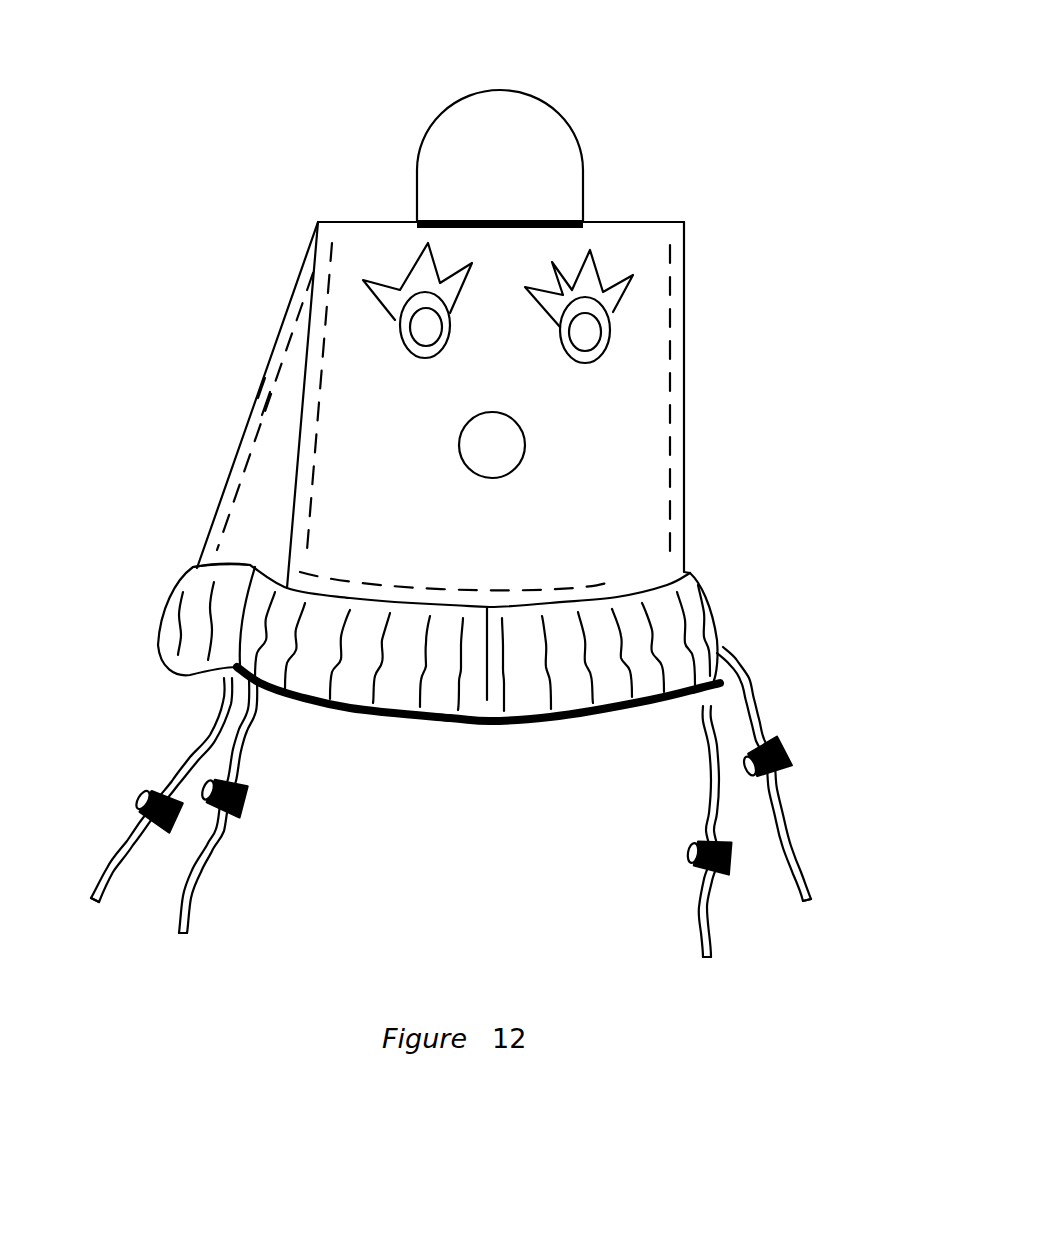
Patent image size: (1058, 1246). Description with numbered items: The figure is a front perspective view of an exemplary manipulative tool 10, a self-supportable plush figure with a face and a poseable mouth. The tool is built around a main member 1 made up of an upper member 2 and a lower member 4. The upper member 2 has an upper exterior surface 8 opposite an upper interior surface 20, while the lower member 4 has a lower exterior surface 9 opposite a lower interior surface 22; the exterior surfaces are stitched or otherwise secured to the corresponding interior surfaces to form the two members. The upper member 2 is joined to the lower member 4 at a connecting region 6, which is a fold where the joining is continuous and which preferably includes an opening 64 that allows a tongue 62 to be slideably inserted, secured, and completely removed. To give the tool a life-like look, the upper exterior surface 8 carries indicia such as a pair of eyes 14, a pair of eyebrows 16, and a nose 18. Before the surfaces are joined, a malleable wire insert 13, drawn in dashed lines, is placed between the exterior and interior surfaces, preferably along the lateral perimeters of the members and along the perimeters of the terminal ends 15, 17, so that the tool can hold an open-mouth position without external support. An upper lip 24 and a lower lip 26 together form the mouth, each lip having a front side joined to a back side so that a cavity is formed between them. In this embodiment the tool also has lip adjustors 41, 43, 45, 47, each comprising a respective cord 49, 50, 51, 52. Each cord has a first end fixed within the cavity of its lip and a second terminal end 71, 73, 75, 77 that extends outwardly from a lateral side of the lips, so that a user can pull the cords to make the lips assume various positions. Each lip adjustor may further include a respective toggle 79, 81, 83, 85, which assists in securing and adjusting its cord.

The manipulative tool 10 is at (670, 68).
The main member 1 is at (276, 172).
The upper member 2 is at (640, 453).
The lower member 4 is at (265, 452).
The connecting region 6 is at (617, 220).
The upper exterior surface 8 is at (673, 332).
The lower exterior surface 9 is at (263, 380).
The malleable wire insert 13 is at (672, 250).
The pair of eyes 14 is at (400, 343).
The terminal end 15 is at (487, 607).
The pair of eyebrows 16 is at (403, 280).
The terminal end 17 is at (265, 565).
The nose 18 is at (502, 452).
The upper interior surface 20 is at (312, 300).
The lower interior surface 22 is at (267, 397).
The upper lip 24 is at (705, 605).
The lower lip 26 is at (185, 627).
The lip adjustor 41 is at (78, 842).
The lip adjustor 43 is at (227, 910).
The lip adjustor 45 is at (677, 948).
The lip adjustor 47 is at (803, 848).
The cord 49 is at (122, 857).
The cord 50 is at (203, 867).
The cord 51 is at (703, 741).
The cord 52 is at (753, 693).
The tongue 62 is at (538, 132).
The opening 64 is at (567, 220).
The second terminal end 71 is at (95, 900).
The second terminal end 73 is at (180, 940).
The second terminal end 75 is at (705, 960).
The second terminal end 77 is at (807, 905).
The toggle 79 is at (158, 793).
The toggle 81 is at (247, 803).
The toggle 83 is at (700, 870).
The toggle 85 is at (790, 762).